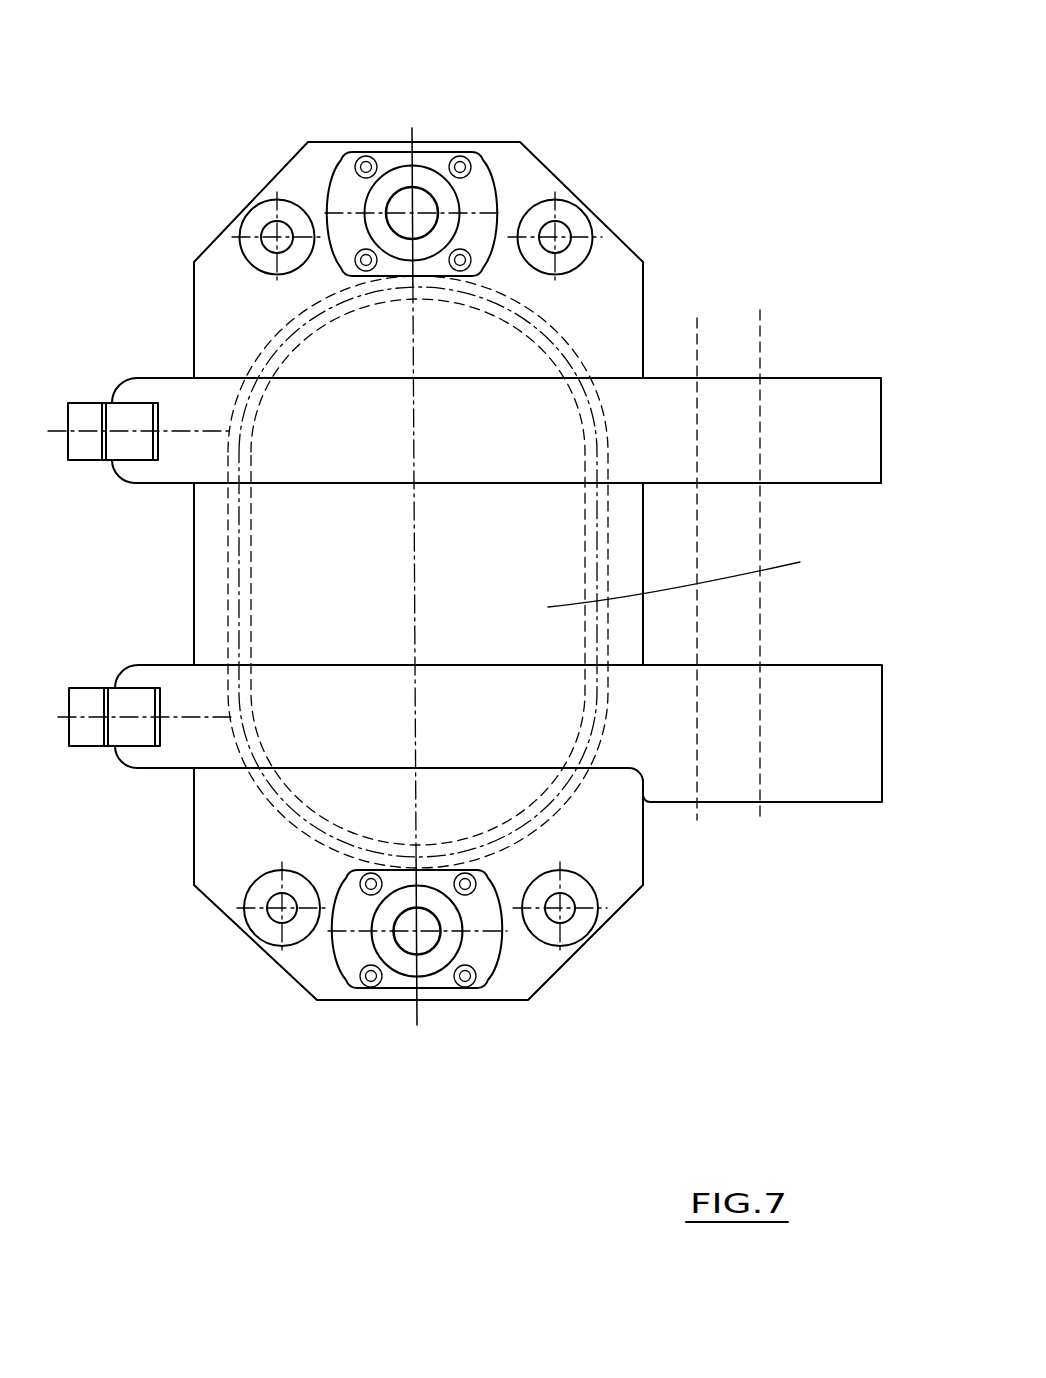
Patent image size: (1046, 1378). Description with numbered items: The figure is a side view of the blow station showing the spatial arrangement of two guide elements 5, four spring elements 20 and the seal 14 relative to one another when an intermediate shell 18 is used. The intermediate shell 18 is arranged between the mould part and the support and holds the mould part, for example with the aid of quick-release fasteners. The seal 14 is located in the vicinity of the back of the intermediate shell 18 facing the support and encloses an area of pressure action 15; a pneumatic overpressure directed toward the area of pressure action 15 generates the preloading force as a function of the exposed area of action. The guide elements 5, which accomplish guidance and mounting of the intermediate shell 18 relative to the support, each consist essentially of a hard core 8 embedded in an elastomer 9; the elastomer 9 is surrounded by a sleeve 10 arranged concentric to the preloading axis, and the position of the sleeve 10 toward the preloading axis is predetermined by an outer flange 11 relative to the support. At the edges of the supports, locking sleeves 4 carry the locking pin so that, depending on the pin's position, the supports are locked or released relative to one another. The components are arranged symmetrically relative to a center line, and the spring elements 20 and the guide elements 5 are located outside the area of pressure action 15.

The locking sleeve 4 is at (118, 408).
The guide element 5 is at (425, 150).
The core 8 is at (762, 327).
The elastomer 9 is at (400, 967).
The sleeve 10 is at (500, 960).
The outer flange 11 is at (343, 963).
The seal 14 is at (263, 797).
The area of pressure action 15 is at (694, 580).
The intermediate shell 18 is at (623, 242).
The spring element 20 is at (266, 205).